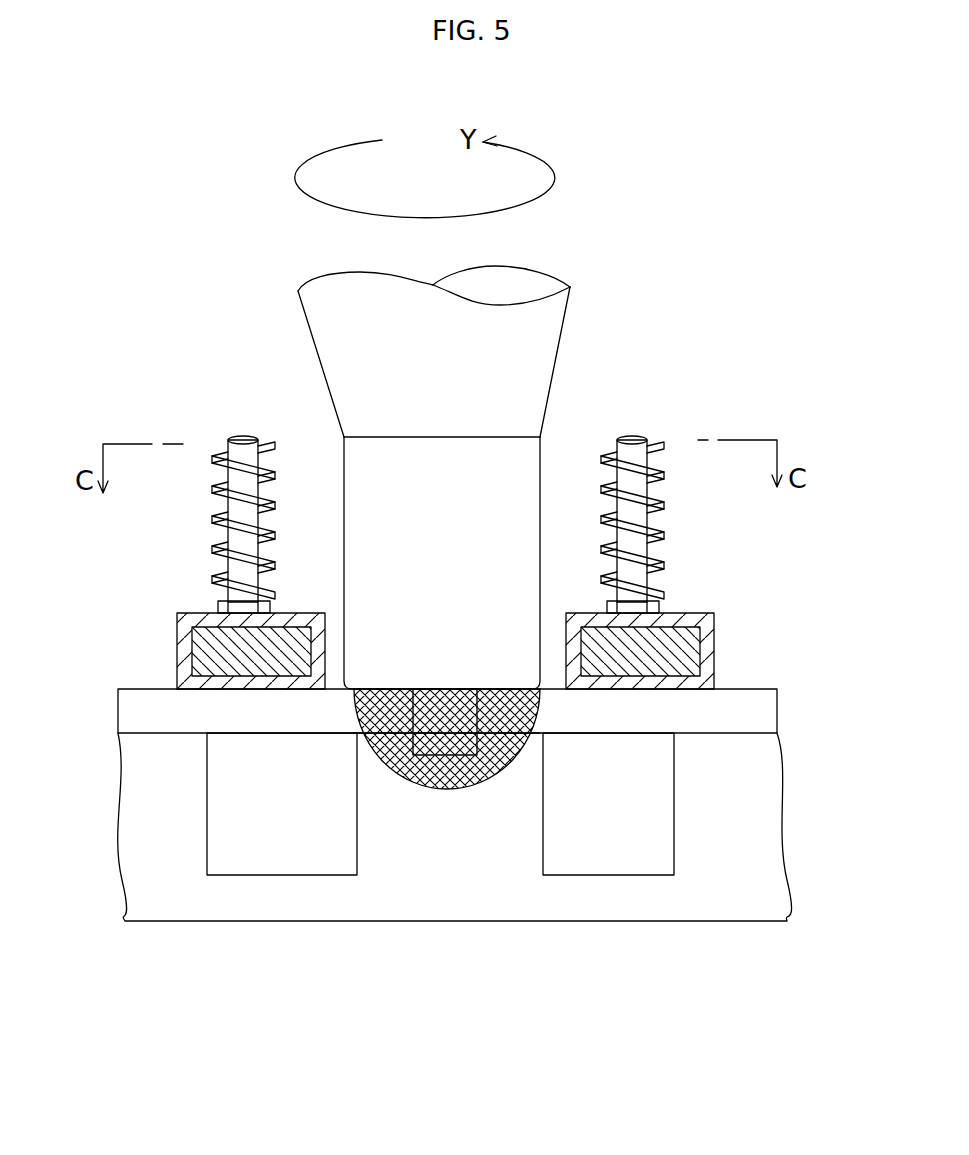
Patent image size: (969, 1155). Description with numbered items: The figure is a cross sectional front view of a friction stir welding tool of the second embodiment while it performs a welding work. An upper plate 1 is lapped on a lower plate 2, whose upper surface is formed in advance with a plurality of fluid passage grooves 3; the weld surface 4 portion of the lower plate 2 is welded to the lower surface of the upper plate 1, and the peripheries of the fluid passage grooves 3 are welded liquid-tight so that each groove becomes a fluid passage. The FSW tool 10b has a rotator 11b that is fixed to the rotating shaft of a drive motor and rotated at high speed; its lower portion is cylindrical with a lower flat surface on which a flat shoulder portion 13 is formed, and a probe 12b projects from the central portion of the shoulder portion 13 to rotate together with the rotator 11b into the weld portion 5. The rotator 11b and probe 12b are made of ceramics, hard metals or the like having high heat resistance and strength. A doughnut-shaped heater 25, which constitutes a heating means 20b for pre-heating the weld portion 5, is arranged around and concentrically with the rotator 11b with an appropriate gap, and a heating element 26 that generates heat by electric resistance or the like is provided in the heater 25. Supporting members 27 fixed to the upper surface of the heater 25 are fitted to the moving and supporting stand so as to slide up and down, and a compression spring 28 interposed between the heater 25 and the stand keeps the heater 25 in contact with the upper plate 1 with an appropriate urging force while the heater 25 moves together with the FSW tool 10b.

The upper plate 1 is at (750, 707).
The lower plate 2 is at (690, 873).
The fluid passage grooves 3 is at (300, 850).
The weld surface 4 is at (752, 735).
The weld portion 5 is at (447, 790).
The FSW tool 10b is at (456, 458).
The rotator 11b is at (327, 333).
The probe 12b is at (442, 688).
The shoulder portion 13 is at (356, 707).
The heating means 20b is at (722, 542).
The heater 25 is at (710, 652).
The heating element 26 is at (678, 614).
The supporting members 27 is at (634, 448).
The compression spring 28 is at (765, 553).